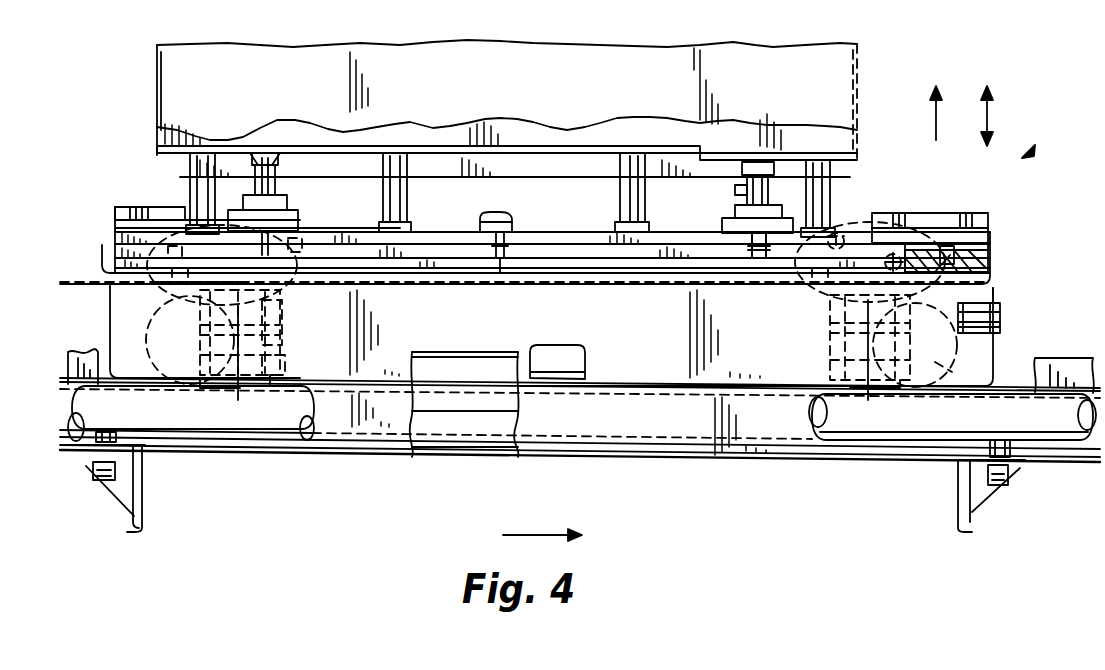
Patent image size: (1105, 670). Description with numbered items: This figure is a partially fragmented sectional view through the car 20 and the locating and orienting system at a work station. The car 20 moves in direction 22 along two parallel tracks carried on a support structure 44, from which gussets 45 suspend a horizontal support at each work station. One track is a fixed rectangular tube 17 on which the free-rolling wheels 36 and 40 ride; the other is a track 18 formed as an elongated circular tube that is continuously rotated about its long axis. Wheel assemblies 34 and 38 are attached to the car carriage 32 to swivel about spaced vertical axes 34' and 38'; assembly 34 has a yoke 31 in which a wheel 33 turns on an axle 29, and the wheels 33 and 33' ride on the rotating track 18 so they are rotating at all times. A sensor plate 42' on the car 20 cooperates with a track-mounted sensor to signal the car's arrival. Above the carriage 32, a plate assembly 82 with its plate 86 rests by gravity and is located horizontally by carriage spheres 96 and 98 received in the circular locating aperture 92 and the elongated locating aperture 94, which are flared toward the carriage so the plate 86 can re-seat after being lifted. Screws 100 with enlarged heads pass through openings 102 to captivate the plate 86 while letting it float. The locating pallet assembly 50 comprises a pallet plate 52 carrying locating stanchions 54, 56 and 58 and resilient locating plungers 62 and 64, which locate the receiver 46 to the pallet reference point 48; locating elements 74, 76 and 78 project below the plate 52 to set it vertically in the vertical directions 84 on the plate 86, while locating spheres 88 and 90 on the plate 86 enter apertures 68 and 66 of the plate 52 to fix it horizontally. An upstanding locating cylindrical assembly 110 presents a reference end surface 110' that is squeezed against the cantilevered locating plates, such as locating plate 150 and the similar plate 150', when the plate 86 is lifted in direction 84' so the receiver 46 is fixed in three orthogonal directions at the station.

The fixed rectangular tube 17 is at (323, 384).
The track 18 is at (838, 460).
The car 20 is at (657, 352).
The direction 22 is at (527, 535).
The axle 29 is at (282, 361).
The yoke 31 is at (282, 336).
The car carriage 32 is at (414, 271).
The wheel 33 is at (219, 398).
The wheel 33' is at (866, 403).
The wheel assembly 34 is at (213, 337).
The vertical axis 34' is at (258, 362).
The wheel 36 is at (156, 360).
The wheel assembly 38 is at (875, 341).
The vertical axis 38' is at (890, 363).
The wheel 40 is at (944, 373).
The sensor plate 42' is at (1004, 310).
The support structure 44 is at (678, 460).
The gusset 45 is at (144, 492).
The receiver 46 is at (858, 79).
The pallet reference point 48 is at (272, 168).
The locating pallet assembly 50 is at (466, 226).
The pallet plate 52 is at (658, 233).
The locating stanchion 54 is at (192, 191).
The locating stanchion 56 is at (400, 204).
The locating stanchion 58 is at (622, 205).
The resilient locating plunger 62 is at (278, 204).
The resilient locating plunger 64 is at (746, 207).
The aperture 66 is at (183, 232).
The aperture 68 is at (833, 237).
The locating element 74 is at (300, 228).
The locating element 76 is at (754, 271).
The locating element 78 is at (502, 274).
The plate assembly 82 is at (1030, 152).
The vertical directions 84 is at (1004, 116).
The upward direction 84' is at (921, 117).
The plate 86 is at (570, 263).
The locating sphere 88 is at (816, 296).
The locating sphere 90 is at (90, 281).
The circular locating aperture 92 is at (280, 290).
The elongated locating aperture 94 is at (889, 214).
The projecting sphere 96 is at (176, 302).
The projecting sphere 98 is at (870, 285).
The screw 100 is at (1002, 282).
The opening 102 is at (992, 265).
The locating cylindrical assembly 110 is at (968, 245).
The reference end surface 110' is at (935, 202).
The cantilevered locating plate 150 is at (126, 212).
The locator block 150' is at (930, 195).